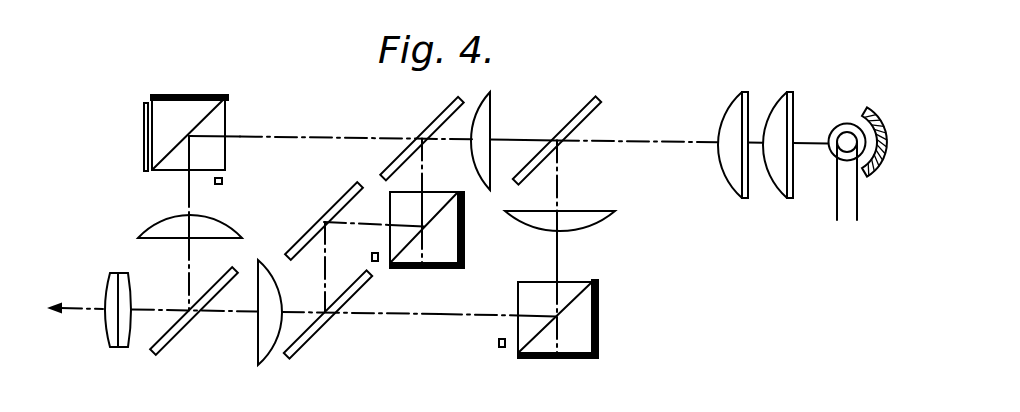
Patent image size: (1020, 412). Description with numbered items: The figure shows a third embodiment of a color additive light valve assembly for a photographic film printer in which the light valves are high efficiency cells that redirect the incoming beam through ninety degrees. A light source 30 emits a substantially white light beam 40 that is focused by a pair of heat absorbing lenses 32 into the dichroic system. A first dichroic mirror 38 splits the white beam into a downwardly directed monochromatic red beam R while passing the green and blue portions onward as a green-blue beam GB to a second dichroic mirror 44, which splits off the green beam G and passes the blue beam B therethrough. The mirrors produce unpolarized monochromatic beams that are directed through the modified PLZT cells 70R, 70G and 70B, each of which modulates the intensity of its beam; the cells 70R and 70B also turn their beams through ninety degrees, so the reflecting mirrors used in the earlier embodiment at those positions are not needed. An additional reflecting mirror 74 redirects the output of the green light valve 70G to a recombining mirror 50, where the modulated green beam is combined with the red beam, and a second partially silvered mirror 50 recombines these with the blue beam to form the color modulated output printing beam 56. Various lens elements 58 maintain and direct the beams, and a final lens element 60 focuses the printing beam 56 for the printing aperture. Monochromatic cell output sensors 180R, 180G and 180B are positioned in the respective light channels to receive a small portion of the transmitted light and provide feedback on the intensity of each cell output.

The light source 30 is at (848, 124).
The heat absorbing lenses 32 is at (745, 92).
The first dichroic mirror 38 is at (600, 102).
The white light beam 40 is at (677, 141).
The second dichroic mirror 44 is at (438, 116).
The partially silvered mirror 50 is at (178, 330).
The output printing beam 56 is at (82, 308).
The lens element 58 is at (215, 215).
The final lens element 60 is at (118, 273).
The reflecting mirror 74 is at (343, 201).
The PLZT cell 70B is at (203, 93).
The PLZT cell 70G is at (452, 270).
The PLZT cell 70R is at (582, 279).
The monochromatic cell output sensor 180B is at (223, 180).
The monochromatic cell output sensor 180G is at (376, 262).
The monochromatic cell output sensor 180R is at (502, 348).
The blue beam B is at (292, 137).
The green beam G is at (424, 176).
The red beam R is at (559, 186).
The green-blue beam GB is at (522, 140).